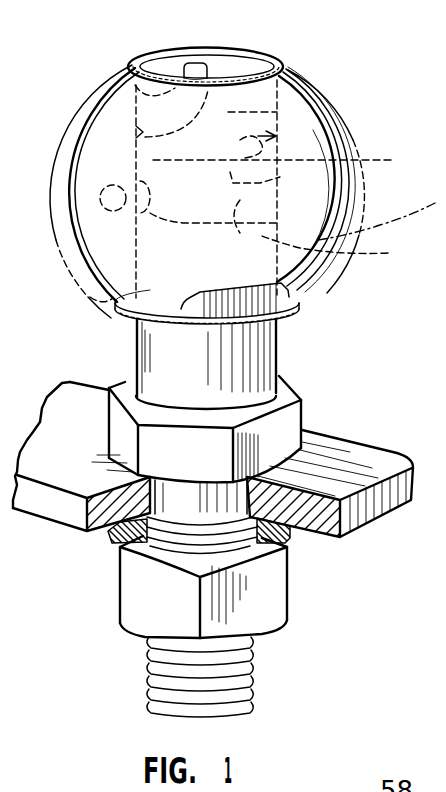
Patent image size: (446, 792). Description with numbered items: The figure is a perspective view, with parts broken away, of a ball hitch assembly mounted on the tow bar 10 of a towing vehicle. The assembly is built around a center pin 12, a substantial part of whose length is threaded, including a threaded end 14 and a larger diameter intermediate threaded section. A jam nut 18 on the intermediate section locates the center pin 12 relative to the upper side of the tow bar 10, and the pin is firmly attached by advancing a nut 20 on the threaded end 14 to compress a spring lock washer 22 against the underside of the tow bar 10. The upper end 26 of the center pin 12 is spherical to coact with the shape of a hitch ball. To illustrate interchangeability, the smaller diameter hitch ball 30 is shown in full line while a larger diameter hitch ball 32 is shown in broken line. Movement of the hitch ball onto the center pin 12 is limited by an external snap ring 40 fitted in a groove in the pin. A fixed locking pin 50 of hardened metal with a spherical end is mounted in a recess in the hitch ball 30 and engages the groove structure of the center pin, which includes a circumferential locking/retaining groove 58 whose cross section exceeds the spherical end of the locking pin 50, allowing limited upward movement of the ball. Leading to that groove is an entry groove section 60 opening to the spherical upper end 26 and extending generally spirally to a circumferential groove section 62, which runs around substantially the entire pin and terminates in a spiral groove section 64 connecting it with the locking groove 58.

The tow bar 10 is at (330, 452).
The center pin 12 is at (266, 366).
The threaded end 14 is at (238, 543).
The jam nut 18 is at (302, 417).
The nut 20 is at (266, 597).
The spring lock washer 22 is at (110, 548).
The upper end 26 is at (240, 50).
The hitch ball 30 is at (311, 123).
The hitch ball 32 is at (381, 208).
The external snap ring 40 is at (302, 316).
The fixed locking pin 50 is at (140, 181).
The locking/retaining groove 58 is at (343, 252).
The entry groove section 60 is at (190, 64).
The circumferential groove section 62 is at (445, 752).
The groove section 64 is at (289, 154).